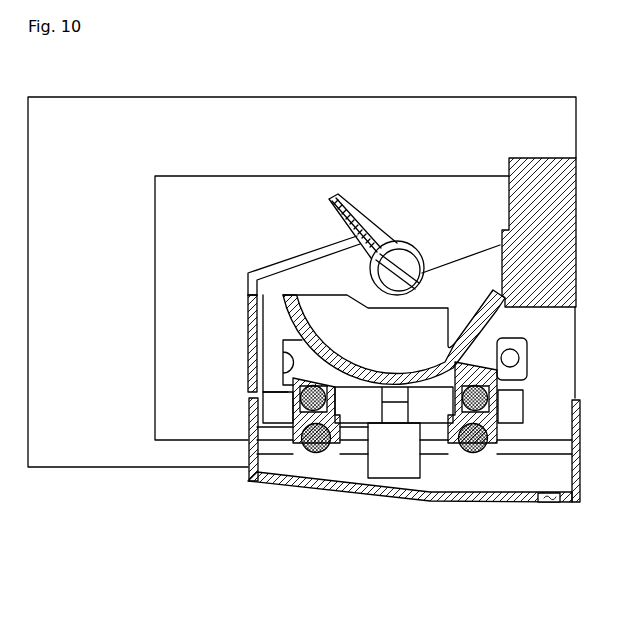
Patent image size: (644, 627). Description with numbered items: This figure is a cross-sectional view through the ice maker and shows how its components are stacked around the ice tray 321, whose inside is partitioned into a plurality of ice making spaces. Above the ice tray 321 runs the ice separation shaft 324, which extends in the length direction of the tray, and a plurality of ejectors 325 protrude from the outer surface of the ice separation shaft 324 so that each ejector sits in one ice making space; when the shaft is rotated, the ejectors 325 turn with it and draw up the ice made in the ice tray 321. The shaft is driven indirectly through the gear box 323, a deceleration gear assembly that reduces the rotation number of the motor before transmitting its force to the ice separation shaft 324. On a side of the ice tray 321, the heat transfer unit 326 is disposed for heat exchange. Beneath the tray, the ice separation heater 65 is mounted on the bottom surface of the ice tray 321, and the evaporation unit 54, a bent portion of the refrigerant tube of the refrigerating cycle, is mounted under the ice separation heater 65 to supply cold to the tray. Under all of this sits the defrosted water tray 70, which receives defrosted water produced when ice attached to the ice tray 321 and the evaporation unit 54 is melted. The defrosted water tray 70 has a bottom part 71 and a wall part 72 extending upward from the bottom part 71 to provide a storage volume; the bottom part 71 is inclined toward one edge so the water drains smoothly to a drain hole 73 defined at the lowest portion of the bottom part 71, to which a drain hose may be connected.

The gear box 323 is at (275, 117).
The heat transfer unit 326 is at (559, 230).
The ejectors 325 is at (360, 222).
The ice separation shaft 324 is at (412, 267).
The ice tray 321 is at (403, 375).
The ice separation heater 65 is at (298, 393).
The evaporation unit 54 is at (318, 456).
The defrosted water tray 70 is at (430, 449).
The bottom part 71 is at (500, 505).
The wall part 72 is at (591, 478).
The drain hole 73 is at (547, 505).